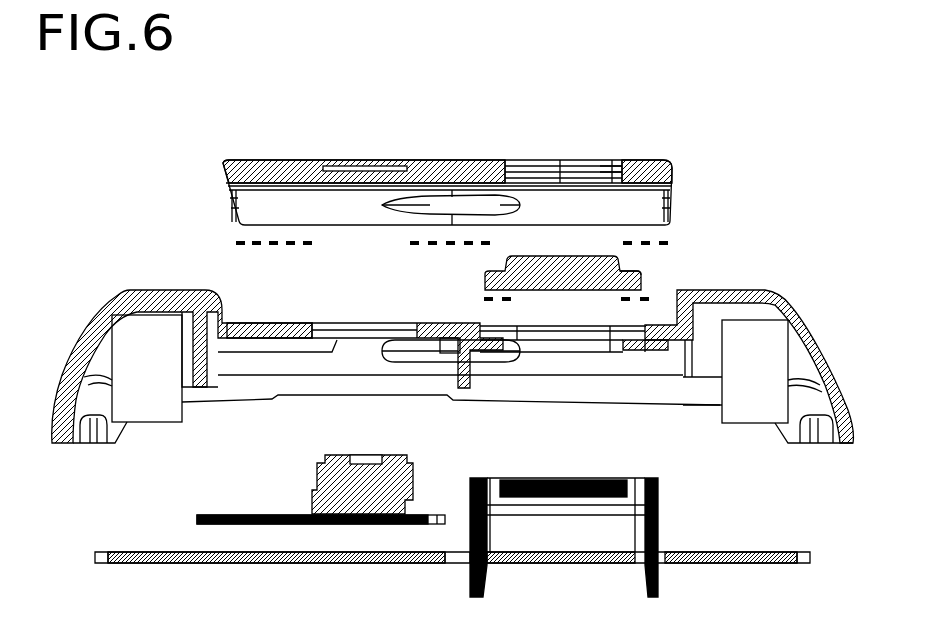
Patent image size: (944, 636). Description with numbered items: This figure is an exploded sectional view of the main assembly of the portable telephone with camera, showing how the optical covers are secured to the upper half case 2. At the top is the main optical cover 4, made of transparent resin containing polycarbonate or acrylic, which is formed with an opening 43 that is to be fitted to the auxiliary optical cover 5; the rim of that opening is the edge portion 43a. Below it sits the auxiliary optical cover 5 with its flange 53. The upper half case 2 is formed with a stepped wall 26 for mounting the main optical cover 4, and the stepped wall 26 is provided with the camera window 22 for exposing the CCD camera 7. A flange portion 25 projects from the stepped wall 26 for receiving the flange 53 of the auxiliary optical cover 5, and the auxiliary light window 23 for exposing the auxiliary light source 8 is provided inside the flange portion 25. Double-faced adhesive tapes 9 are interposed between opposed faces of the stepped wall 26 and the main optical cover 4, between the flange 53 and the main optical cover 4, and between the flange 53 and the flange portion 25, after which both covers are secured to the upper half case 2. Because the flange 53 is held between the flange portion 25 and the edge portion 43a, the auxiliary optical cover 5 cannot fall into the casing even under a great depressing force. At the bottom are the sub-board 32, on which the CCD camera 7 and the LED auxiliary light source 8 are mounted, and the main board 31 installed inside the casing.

The upper half case 2 is at (800, 322).
The main optical cover 4 is at (278, 160).
The opening 43 is at (613, 160).
The edge portion 43a is at (648, 160).
The double-faced adhesive tapes 9 is at (236, 241).
The auxiliary optical cover 5 is at (620, 262).
The flange 53 is at (638, 274).
The stepped wall 26 is at (268, 322).
The camera window 22 is at (325, 322).
The auxiliary light window 23 is at (623, 352).
The flange portion 25 is at (636, 352).
The CCD camera 7 is at (338, 455).
The auxiliary light source 8 is at (543, 478).
The main board 31 is at (145, 552).
The sub-board 32 is at (228, 514).